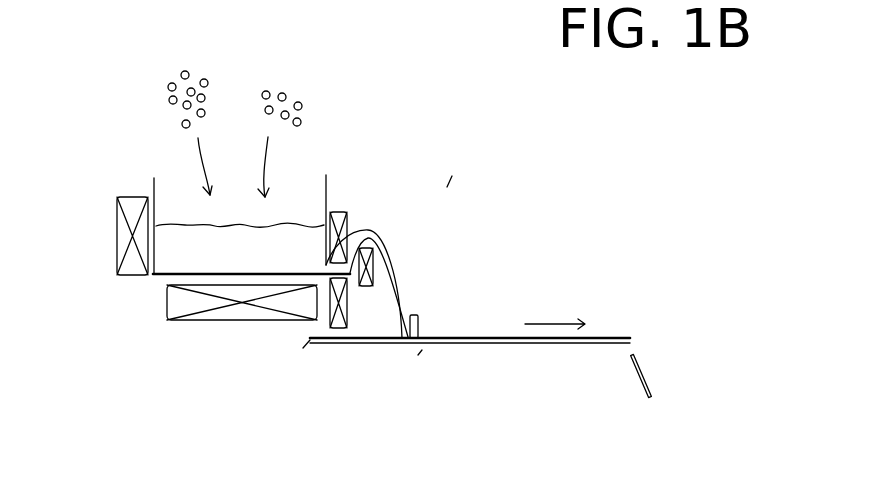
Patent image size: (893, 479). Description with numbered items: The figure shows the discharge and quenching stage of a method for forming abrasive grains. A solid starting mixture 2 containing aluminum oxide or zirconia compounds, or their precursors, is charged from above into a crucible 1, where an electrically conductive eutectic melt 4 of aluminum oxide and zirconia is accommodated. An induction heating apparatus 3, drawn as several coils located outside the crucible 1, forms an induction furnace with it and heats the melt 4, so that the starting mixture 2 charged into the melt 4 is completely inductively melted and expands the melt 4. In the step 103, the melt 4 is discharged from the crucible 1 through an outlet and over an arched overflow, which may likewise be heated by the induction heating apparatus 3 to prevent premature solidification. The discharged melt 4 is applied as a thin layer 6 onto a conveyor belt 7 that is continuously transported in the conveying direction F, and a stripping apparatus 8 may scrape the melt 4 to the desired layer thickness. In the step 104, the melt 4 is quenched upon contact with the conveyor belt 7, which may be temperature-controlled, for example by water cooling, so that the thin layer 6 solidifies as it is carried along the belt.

The crucible 1 is at (153, 277).
The solid starting mixture 2 is at (203, 65).
The induction heating apparatus 3 is at (327, 193).
The eutectic melt 4 is at (280, 245).
The thin layer 6 is at (488, 338).
The conveyor belt 7 is at (308, 343).
The stripping apparatus 8 is at (415, 313).
The step of discharging the eutectic melt 103 is at (447, 187).
The step of quenching the eutectic melt 104 is at (418, 355).